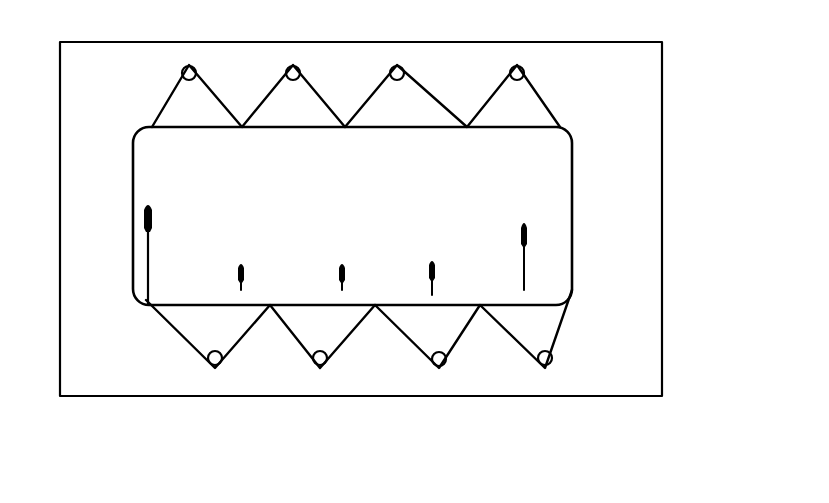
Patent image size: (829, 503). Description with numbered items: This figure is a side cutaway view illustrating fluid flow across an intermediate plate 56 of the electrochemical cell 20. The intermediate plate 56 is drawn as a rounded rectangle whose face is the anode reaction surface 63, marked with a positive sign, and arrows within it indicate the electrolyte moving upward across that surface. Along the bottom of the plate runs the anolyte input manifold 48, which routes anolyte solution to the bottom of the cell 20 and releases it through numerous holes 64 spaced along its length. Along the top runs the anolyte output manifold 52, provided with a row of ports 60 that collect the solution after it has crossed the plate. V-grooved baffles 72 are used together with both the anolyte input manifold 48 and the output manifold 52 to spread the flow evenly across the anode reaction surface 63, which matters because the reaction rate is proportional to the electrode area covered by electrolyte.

The electrochemical cell 20 is at (682, 161).
The anolyte output manifold 52 is at (567, 60).
The intermediate plate 56 is at (559, 206).
The ports 60 is at (408, 63).
The holes 64 is at (441, 367).
The V-grooved baffles 72 is at (543, 92).
The anolyte input manifold 48 is at (561, 343).
The anode reaction surface 63 is at (216, 218).